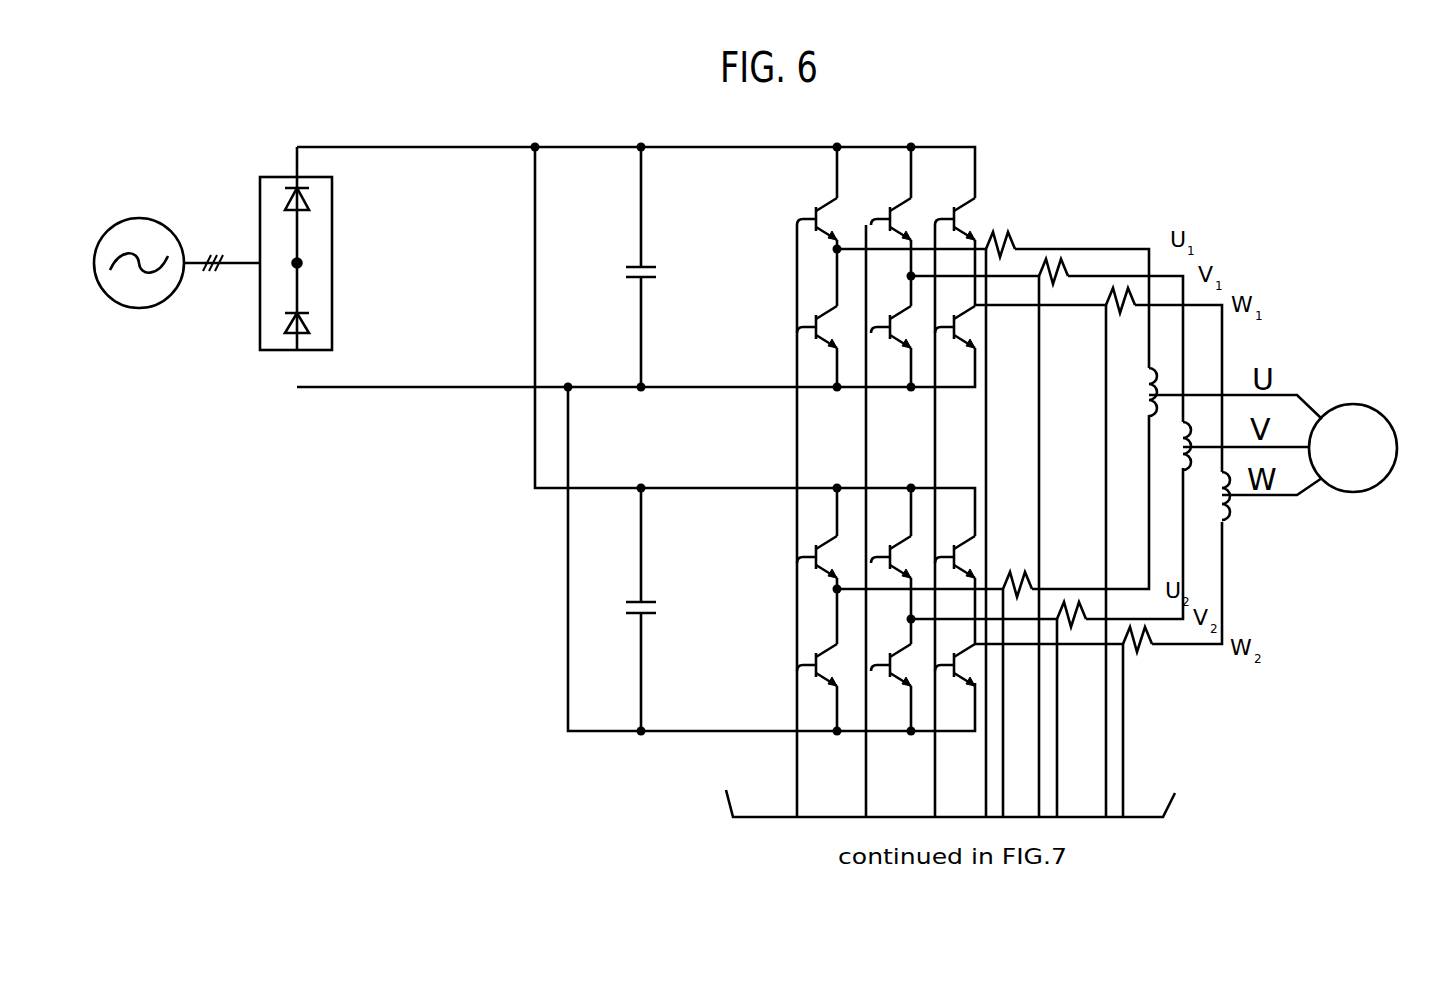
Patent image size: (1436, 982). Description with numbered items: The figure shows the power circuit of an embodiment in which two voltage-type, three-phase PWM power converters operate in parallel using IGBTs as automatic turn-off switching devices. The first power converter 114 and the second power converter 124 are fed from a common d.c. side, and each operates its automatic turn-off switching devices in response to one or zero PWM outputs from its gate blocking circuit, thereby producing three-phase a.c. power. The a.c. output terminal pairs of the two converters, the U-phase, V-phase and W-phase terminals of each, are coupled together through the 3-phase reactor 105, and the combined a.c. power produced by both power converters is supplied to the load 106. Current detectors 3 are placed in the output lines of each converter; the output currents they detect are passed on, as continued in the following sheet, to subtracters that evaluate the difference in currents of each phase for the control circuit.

The first power converter 114 is at (888, 137).
The second power converter 124 is at (780, 468).
The current detectors 3 is at (1138, 222).
The 3-phase reactor 105 is at (1232, 528).
The load 106 is at (1363, 503).